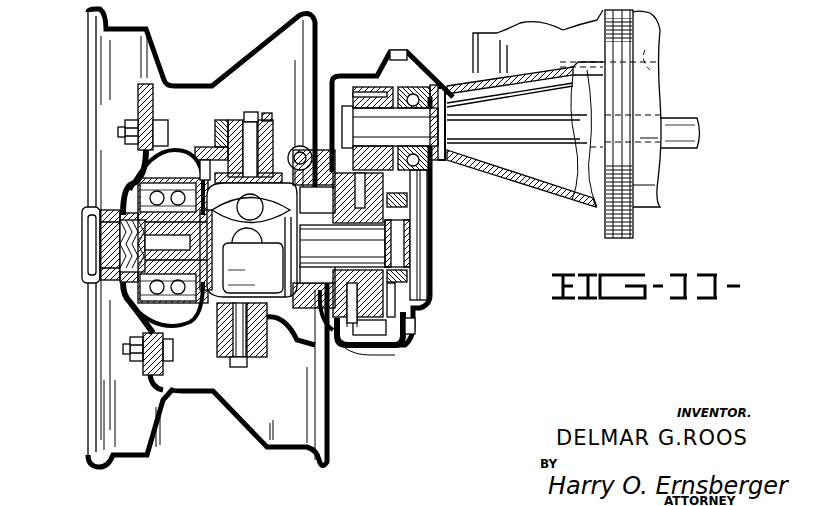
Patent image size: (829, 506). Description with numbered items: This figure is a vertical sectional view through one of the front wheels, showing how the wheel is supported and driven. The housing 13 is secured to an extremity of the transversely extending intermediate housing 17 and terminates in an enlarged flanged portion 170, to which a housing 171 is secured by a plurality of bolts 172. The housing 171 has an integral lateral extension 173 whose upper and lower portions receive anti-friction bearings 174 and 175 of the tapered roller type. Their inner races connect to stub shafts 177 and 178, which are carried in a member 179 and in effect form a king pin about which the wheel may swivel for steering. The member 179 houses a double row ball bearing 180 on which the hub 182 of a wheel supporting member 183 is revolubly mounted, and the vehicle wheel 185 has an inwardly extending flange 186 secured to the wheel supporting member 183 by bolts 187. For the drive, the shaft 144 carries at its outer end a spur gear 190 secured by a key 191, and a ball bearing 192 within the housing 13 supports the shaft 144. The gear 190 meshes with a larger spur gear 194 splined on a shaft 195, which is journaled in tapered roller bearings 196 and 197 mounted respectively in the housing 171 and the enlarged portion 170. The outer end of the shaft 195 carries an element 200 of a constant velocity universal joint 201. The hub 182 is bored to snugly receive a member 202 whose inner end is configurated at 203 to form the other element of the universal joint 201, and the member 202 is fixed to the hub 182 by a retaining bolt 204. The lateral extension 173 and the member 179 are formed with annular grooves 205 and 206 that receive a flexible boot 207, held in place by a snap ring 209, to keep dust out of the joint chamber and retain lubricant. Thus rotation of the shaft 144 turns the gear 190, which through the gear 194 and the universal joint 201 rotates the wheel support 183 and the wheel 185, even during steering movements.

The housing 13 is at (545, 195).
The intermediate housing 17 is at (653, 37).
The shaft 144 is at (673, 117).
The enlarged flanged portion 170 is at (415, 328).
The housing 171 is at (338, 77).
The bolts 172 is at (412, 50).
The lateral extension 173 is at (360, 342).
The anti-friction bearing 174 is at (262, 305).
The anti-friction bearing 175 is at (245, 122).
The stub shaft 177 is at (243, 367).
The stub shaft 178 is at (266, 113).
The member 179 is at (226, 145).
The anti-friction bearing 180 is at (133, 170).
The hub 182 is at (150, 283).
The wheel supporting member 183 is at (128, 186).
The vehicle wheel 185 is at (258, 38).
The inwardly extending flange 186 is at (138, 92).
The bolts 187 is at (126, 125).
The spur gear 190 is at (365, 92).
The key 191 is at (390, 106).
The ball bearing 192 is at (432, 178).
The spur gear 194 is at (395, 350).
The shaft 195 is at (412, 234).
The tapered roller bearing 196 is at (420, 266).
The tapered roller bearing 197 is at (418, 292).
The universal joint element 200 is at (248, 240).
The universal joint 201 is at (253, 268).
The member 202 is at (120, 213).
The configurated inner end 203 is at (212, 152).
The retaining bolt 204 is at (98, 258).
The annular groove 205 is at (302, 345).
The annular groove 206 is at (263, 350).
The flexible boot 207 is at (310, 335).
The snap ring 209 is at (285, 150).